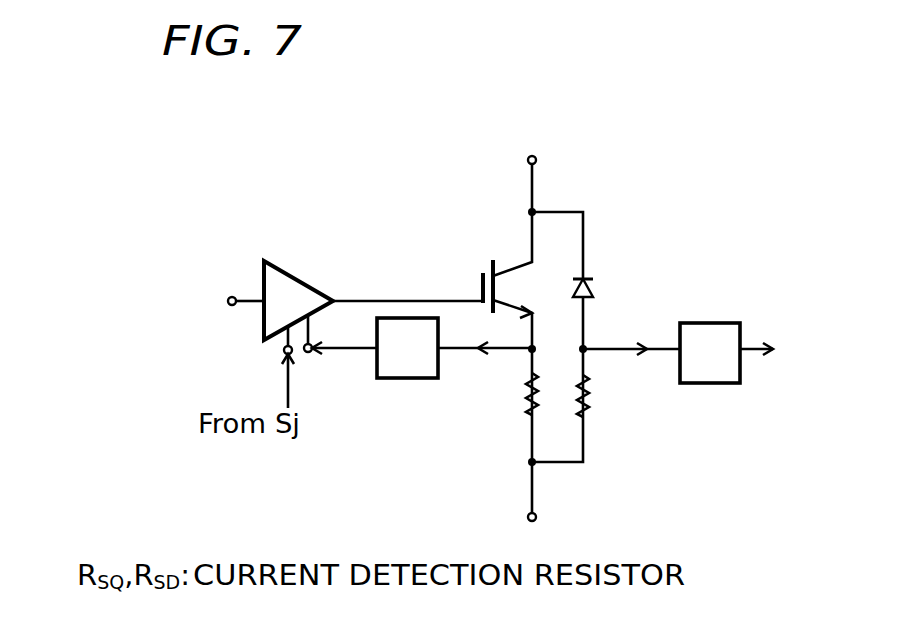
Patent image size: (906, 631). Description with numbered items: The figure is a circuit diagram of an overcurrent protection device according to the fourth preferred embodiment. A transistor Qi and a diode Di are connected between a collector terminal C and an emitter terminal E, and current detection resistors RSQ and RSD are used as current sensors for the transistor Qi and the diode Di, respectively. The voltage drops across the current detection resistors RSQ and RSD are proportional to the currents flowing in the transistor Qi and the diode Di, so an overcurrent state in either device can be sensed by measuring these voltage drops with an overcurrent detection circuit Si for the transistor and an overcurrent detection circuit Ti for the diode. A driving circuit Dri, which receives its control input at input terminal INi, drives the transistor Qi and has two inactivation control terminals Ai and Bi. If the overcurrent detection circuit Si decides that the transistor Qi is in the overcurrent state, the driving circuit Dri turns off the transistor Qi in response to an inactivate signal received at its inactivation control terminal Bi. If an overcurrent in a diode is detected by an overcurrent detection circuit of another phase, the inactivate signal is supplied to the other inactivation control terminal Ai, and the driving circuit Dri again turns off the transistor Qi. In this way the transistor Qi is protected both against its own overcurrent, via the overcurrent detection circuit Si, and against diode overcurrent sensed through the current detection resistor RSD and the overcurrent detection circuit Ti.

The input terminal INi is at (222, 301).
The driving circuit Dri is at (283, 290).
The inactivation control terminal Ai is at (284, 352).
The inactivation control terminal Bi is at (311, 355).
The overcurrent detection circuit Si is at (408, 372).
The transistor Qi is at (500, 260).
The diode Di is at (595, 290).
The current detection resistor RSQ is at (528, 397).
The current detection resistor RSD is at (587, 413).
The overcurrent detection circuit Ti is at (723, 372).
The collector terminal C is at (545, 154).
The emitter terminal E is at (543, 516).